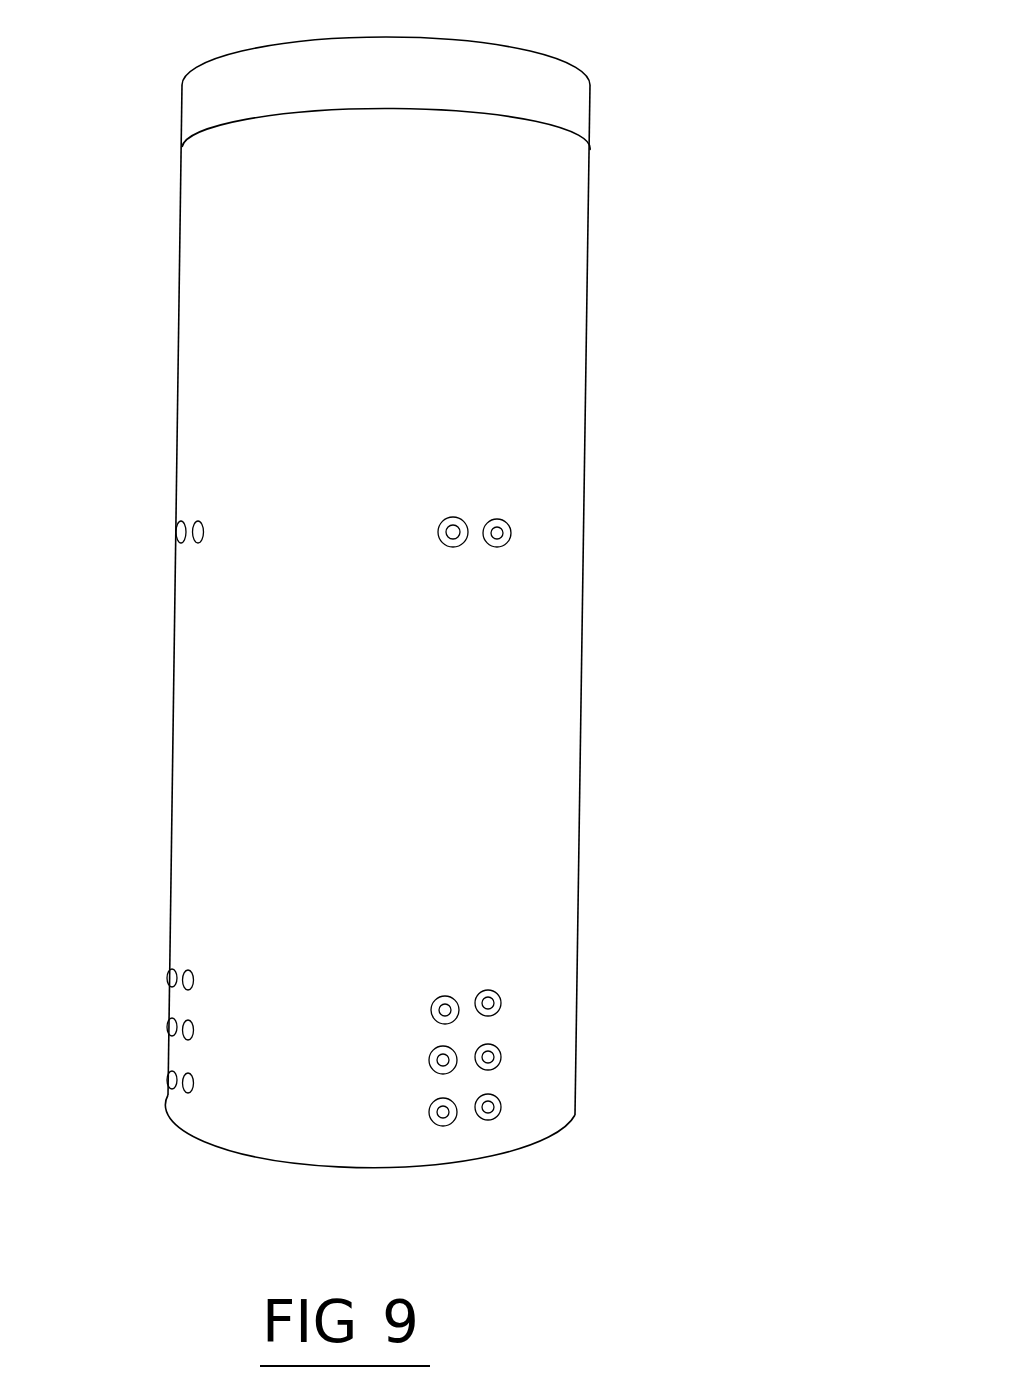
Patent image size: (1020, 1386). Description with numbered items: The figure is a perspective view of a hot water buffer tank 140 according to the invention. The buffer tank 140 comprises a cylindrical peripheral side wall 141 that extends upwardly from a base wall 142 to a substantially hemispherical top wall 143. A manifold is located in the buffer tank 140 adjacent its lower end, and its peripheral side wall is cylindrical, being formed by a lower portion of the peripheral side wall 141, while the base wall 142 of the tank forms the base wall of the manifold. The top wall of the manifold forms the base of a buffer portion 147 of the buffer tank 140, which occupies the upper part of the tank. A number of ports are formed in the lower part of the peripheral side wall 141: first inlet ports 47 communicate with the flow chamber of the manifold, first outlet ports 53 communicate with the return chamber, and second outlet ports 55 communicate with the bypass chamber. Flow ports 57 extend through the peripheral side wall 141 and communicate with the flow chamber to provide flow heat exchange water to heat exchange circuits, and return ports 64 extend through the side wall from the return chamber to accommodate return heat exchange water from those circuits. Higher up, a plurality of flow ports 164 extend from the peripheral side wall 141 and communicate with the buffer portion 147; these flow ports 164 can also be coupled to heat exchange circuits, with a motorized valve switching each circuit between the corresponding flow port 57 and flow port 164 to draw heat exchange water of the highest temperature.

The buffer tank 140 is at (660, 222).
The cylindrical peripheral side wall 141 is at (568, 371).
The base wall 142 is at (320, 1167).
The substantially hemispherical top wall 143 is at (394, 38).
The buffer portion 147 is at (562, 671).
The flow ports 164 is at (178, 545).
The first inlet ports 47 is at (178, 965).
The flow ports 57 is at (195, 988).
The second outlet ports 55 is at (502, 1053).
The first outlet ports 53 is at (172, 1058).
The return ports 64 is at (195, 1090).